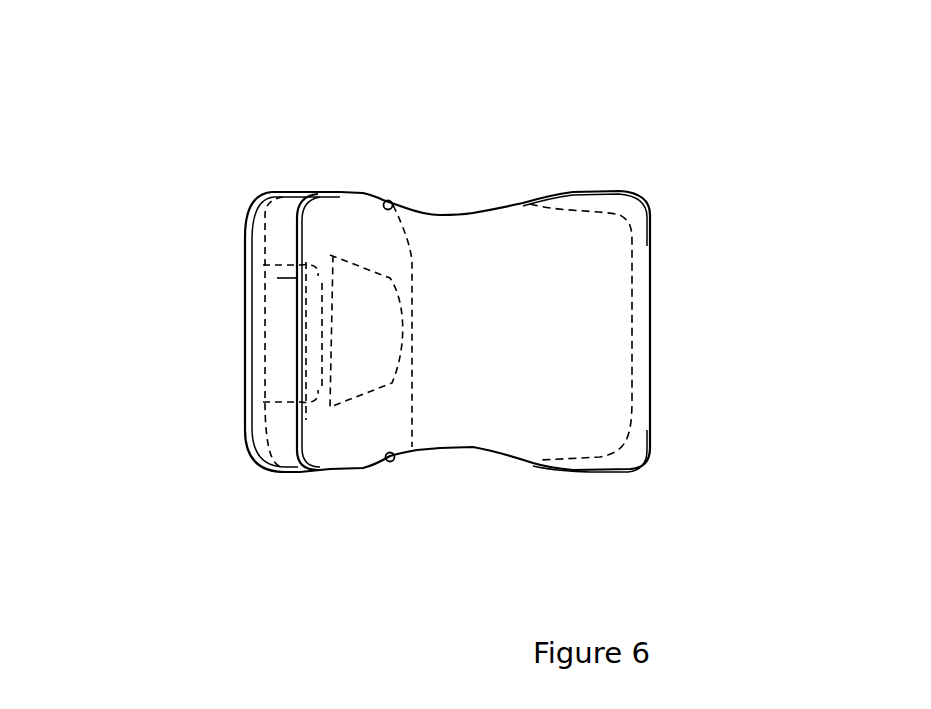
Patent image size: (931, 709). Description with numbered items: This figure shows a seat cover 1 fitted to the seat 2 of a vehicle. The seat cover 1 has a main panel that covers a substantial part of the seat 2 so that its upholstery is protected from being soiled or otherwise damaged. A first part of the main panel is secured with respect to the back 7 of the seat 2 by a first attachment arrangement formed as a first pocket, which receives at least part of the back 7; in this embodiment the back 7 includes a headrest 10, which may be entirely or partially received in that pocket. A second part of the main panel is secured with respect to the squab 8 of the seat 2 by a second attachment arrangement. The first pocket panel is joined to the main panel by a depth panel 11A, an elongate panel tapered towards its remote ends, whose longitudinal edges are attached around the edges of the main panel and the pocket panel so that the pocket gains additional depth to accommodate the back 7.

The seat cover 1 is at (537, 342).
The seat 2 is at (441, 248).
The back 7 is at (364, 362).
The squab 8 is at (573, 418).
The headrest 10 is at (273, 347).
The depth panel 11A is at (275, 243).